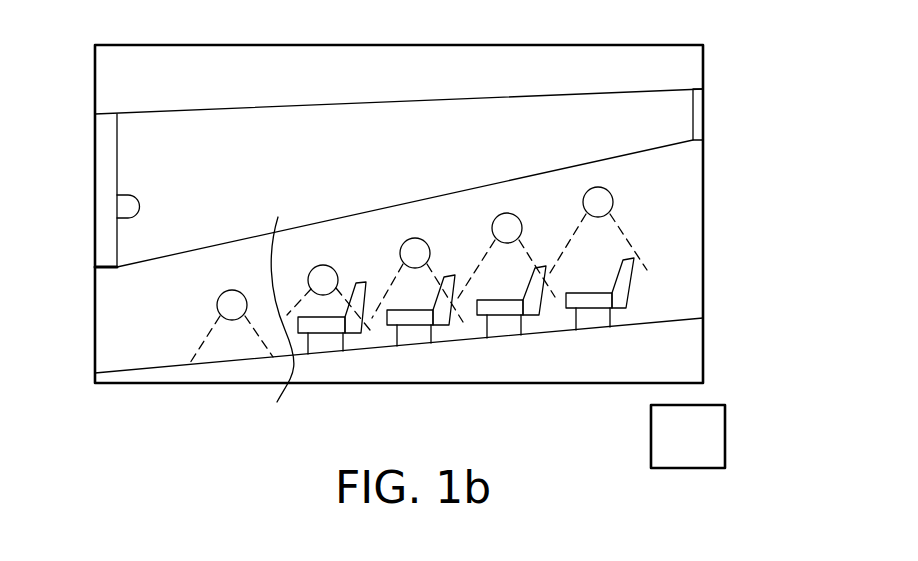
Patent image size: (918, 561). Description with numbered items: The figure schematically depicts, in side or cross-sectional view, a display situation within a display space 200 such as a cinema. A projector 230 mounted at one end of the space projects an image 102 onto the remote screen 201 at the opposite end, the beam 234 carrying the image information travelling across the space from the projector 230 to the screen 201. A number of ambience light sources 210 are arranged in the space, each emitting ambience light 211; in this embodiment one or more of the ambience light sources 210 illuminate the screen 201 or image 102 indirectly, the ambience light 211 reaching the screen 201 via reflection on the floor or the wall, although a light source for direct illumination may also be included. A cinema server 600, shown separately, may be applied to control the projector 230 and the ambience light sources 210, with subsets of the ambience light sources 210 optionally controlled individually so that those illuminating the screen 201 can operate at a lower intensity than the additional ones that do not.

The display space 200 is at (732, 240).
The remote screen 201 is at (125, 218).
The image 102 is at (105, 172).
The ambience light sources 210 is at (507, 220).
The ambience light 211 is at (212, 348).
The projector 230 is at (700, 115).
The beam 234 is at (276, 325).
The cinema server 600 is at (760, 450).